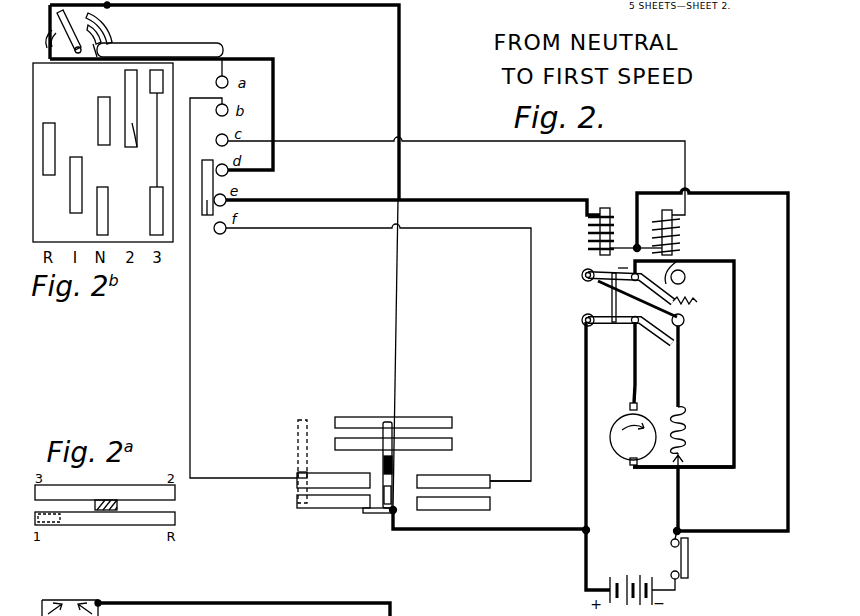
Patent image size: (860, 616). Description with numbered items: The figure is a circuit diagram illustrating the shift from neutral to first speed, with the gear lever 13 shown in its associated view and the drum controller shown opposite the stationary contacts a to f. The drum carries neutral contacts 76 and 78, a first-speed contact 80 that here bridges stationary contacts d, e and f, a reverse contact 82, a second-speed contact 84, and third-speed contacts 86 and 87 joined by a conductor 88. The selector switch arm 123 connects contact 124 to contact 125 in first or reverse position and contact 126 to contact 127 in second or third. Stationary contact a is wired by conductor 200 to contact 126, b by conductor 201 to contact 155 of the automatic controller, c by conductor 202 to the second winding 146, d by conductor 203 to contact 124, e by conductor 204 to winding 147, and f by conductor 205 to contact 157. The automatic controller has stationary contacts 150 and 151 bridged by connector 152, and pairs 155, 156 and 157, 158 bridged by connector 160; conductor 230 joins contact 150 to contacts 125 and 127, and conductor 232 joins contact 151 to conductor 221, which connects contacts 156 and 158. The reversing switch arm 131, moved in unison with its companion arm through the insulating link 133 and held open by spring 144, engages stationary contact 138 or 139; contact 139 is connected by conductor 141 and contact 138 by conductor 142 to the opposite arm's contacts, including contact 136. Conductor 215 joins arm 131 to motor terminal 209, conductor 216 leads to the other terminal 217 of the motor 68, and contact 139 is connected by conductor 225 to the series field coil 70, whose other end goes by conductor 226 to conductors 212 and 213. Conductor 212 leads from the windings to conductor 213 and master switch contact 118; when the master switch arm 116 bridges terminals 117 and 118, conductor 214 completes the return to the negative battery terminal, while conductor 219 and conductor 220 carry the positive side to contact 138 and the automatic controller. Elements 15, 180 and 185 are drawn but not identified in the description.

In FIG. 2a, the gear lever 13 is at (107, 512).
In FIG. 2a, the contact bar 15 is at (88, 517).
In FIG. 2, the motor 68 is at (633, 437).
In FIG. 2, the series field coil 70 is at (688, 434).
In FIG. 2b, the neutral drum contact 76 is at (102, 108).
In FIG. 2b, the neutral drum contact 78 is at (104, 200).
In FIG. 2, the first speed drum contact 80 is at (207, 216).
In FIG. 2b, the first speed drum contact 80 is at (74, 198).
In FIG. 2b, the reverse drum contact 82 is at (50, 140).
In FIG. 2b, the second speed drum contact 84 is at (136, 118).
In FIG. 2b, the third speed drum contact 86 is at (158, 80).
In FIG. 2b, the third speed drum contact 87 is at (153, 216).
In FIG. 2b, the conductor 88 is at (156, 160).
In FIG. 2, the master switch arm 116 is at (689, 562).
In FIG. 2, the master switch terminal 117 is at (680, 578).
In FIG. 2, the master switch contact 118 is at (671, 544).
In FIG. 2, the selector switch arm 123 is at (62, 60).
In FIG. 2, the selector switch contact 124 is at (48, 44).
In FIG. 2, the selector switch contact 125 is at (58, 18).
In FIG. 2, the selector switch contact 126 is at (95, 50).
In FIG. 2, the selector switch contact 127 is at (113, 30).
In FIG. 2, the reversing switch arm 131 is at (622, 328).
In FIG. 2, the link 133 is at (612, 298).
In FIG. 2, the stationary contact 136 is at (685, 277).
In FIG. 2, the stationary contact 138 is at (582, 321).
In FIG. 2, the stationary contact 139 is at (684, 324).
In FIG. 2, the conductor 141 is at (582, 281).
In FIG. 2, the conductor 142 is at (696, 261).
In FIG. 2, the spring 144 is at (690, 303).
In FIG. 2, the relay coil 146 is at (676, 240).
In FIG. 2, the winding 147 is at (590, 232).
In FIG. 2, the stationary contact 150 is at (448, 421).
In FIG. 2, the stationary contact 151 is at (450, 444).
In FIG. 2, the switch connector 152 is at (385, 422).
In FIG. 2, the stationary contact 155 is at (332, 480).
In FIG. 2, the stationary contact 156 is at (328, 506).
In FIG. 2, the stationary contact 157 is at (479, 478).
In FIG. 2, the stationary contact 158 is at (491, 504).
In FIG. 2, the switch connector 160 is at (298, 489).
In FIG. 2, the bracket 180 is at (622, 267).
In FIG. 2, the pivot 185 is at (582, 275).
In FIG. 2, the conductor 200 is at (205, 43).
In FIG. 2, the conductor 201 is at (192, 310).
In FIG. 2, the conductor 202 is at (327, 141).
In FIG. 2, the conductor 203 is at (276, 84).
In FIG. 2, the conductor 204 is at (343, 199).
In FIG. 2, the conductor 205 is at (316, 228).
In FIG. 2, the motor terminal 209 is at (636, 406).
In FIG. 2, the conductor 212 is at (747, 192).
In FIG. 2, the conductor 213 is at (673, 537).
In FIG. 2, the conductor 214 is at (668, 593).
In FIG. 2, the conductor 215 is at (636, 377).
In FIG. 2, the conductor 216 is at (586, 393).
In FIG. 2, the motor terminal 217 is at (632, 468).
In FIG. 2, the conductor 219 is at (583, 566).
In FIG. 2, the conductor 220 is at (478, 530).
In FIG. 2, the conductor 221 is at (390, 513).
In FIG. 2, the conductor 225 is at (681, 387).
In FIG. 2, the conductor 226 is at (682, 498).
In FIG. 2, the conductor 230 is at (399, 314).
In FIG. 2, the conductor 232 is at (393, 468).